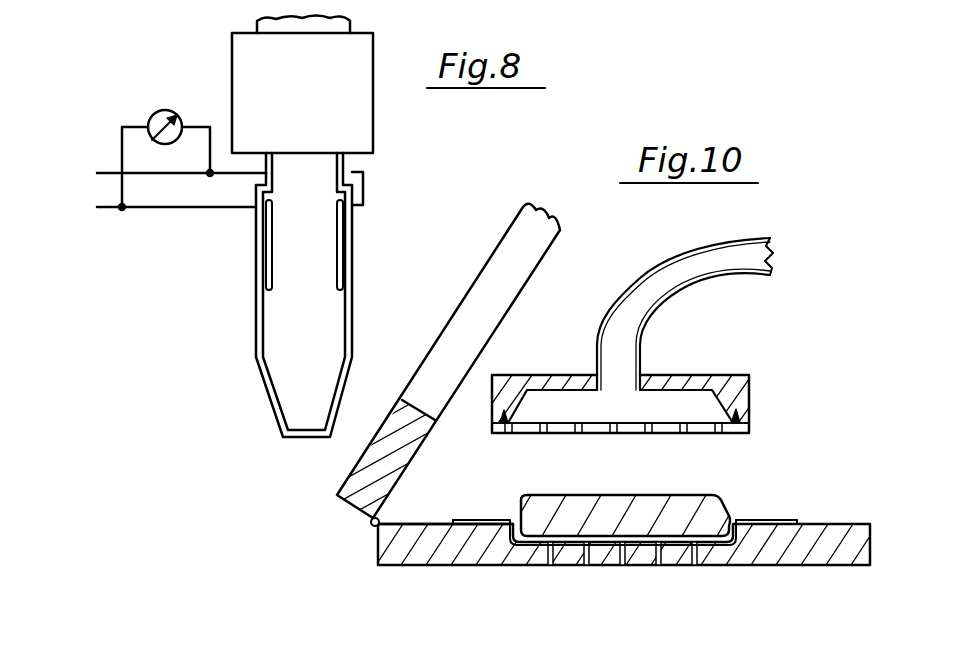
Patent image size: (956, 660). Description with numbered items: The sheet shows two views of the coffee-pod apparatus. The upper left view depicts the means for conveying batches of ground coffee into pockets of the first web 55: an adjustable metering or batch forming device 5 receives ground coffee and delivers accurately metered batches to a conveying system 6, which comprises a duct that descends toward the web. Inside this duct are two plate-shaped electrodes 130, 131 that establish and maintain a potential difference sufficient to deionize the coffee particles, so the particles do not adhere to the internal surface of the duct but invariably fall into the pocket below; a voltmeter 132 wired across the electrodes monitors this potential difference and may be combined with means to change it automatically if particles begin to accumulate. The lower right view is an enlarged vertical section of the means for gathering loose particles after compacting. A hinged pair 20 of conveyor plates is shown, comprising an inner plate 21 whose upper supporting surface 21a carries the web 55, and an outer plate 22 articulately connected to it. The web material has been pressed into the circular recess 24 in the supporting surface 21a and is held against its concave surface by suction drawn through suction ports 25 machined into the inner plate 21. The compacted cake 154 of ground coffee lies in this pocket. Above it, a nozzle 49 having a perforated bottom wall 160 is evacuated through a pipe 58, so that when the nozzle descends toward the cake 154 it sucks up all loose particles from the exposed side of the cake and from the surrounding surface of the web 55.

In FIG. 8, the metering device 5 is at (355, 73).
In FIG. 8, the conveying system 6 is at (354, 312).
In FIG. 8, the electrode 130 is at (274, 268).
In FIG. 8, the electrode 131 is at (333, 251).
In FIG. 8, the voltmeter 132 is at (166, 110).
In FIG. 10, the pair of plates 20 is at (354, 557).
In FIG. 10, the inner plate 21 is at (790, 548).
In FIG. 10, the supporting surface 21a is at (422, 518).
In FIG. 10, the outer plate 22 is at (342, 480).
In FIG. 10, the recess 24 is at (537, 545).
In FIG. 10, the suction ports 25 is at (658, 567).
In FIG. 10, the nozzle 49 is at (747, 390).
In FIG. 10, the first web 55 is at (492, 521).
In FIG. 10, the pipe 58 is at (638, 303).
In FIG. 10, the cake 154 is at (705, 500).
In FIG. 10, the perforated bottom wall 160 is at (683, 434).